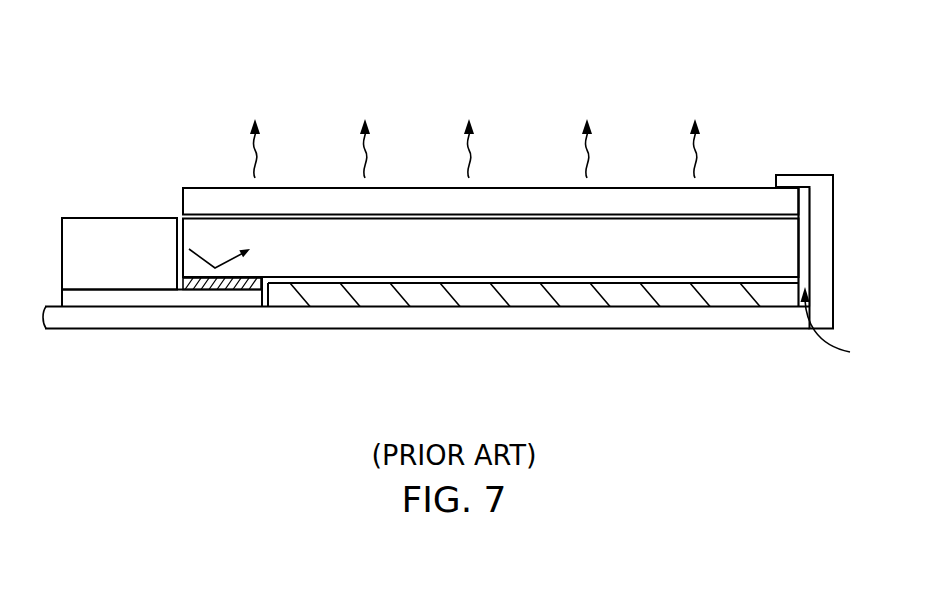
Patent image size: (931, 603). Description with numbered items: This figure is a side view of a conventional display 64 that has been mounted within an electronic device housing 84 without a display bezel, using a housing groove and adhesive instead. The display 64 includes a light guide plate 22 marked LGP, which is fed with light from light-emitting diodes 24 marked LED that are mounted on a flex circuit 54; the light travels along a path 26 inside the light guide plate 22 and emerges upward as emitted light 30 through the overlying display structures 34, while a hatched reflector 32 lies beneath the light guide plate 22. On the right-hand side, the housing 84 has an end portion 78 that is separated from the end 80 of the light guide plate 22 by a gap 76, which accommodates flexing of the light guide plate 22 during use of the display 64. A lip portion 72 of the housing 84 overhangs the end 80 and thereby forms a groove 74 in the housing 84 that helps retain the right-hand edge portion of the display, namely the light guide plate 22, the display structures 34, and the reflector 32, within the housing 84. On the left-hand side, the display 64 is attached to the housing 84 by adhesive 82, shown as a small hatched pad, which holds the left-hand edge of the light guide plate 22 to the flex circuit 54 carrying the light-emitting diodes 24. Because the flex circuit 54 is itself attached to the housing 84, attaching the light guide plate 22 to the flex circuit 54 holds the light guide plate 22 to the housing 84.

The light guide plate 22 is at (548, 237).
The light-emitting diodes 24 is at (112, 230).
The light beam path 26 is at (203, 249).
The emitted light 30 is at (362, 150).
The reflector 32 is at (385, 298).
The display structures 34 is at (200, 186).
The flex circuit 54 is at (125, 298).
The display 64 is at (742, 50).
The lip portion 72 is at (797, 180).
The groove 74 is at (805, 332).
The gap 76 is at (840, 326).
The end portion 78 is at (826, 246).
The end of light guide plate 80 is at (797, 242).
The adhesive 82 is at (218, 280).
The device housing 84 is at (543, 318).